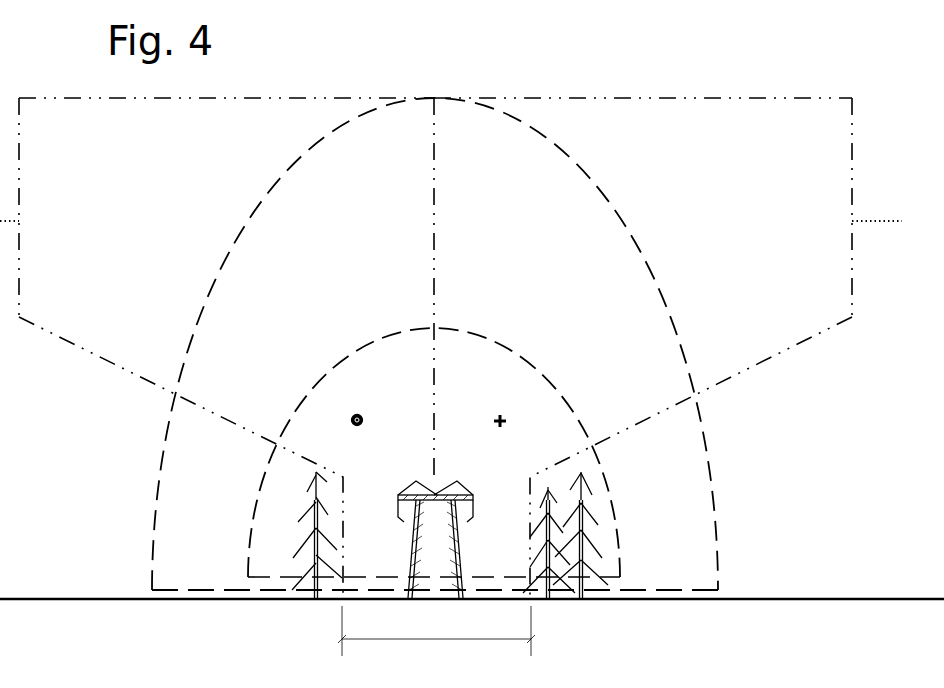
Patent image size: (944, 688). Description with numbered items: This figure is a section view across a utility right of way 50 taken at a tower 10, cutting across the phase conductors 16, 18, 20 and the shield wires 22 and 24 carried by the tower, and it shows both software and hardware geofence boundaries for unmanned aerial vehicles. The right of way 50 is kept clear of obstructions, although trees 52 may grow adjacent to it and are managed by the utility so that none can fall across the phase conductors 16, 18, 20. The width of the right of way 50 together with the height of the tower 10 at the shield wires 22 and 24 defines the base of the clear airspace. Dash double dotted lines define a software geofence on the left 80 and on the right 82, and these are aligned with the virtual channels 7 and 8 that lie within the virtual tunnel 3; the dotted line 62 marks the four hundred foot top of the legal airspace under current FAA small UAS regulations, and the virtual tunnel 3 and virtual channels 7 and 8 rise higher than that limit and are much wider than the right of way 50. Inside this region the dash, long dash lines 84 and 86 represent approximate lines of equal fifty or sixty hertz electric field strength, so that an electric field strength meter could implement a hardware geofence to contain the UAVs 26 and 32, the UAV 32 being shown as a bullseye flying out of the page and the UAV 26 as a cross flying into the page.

The virtual tunnel 3 is at (19, 97).
The virtual channel 7 is at (253, 97).
The virtual channel 8 is at (640, 97).
The dotted line 62 is at (852, 221).
The software geofence (left) 80 is at (63, 334).
The software geofence (right) 82 is at (817, 334).
The line of equal electric field strength 86 is at (637, 235).
The line of equal electric field strength 84 is at (526, 357).
The UAV 32 is at (364, 417).
The UAV 26 is at (505, 416).
The tower 10 is at (437, 525).
The phase conductor 18 is at (437, 500).
The shield wire 22 is at (426, 492).
The shield wire 24 is at (453, 490).
The phase conductor 16 is at (398, 519).
The phase conductor 20 is at (473, 519).
The trees 52 is at (590, 522).
The right of way 50 is at (436, 631).